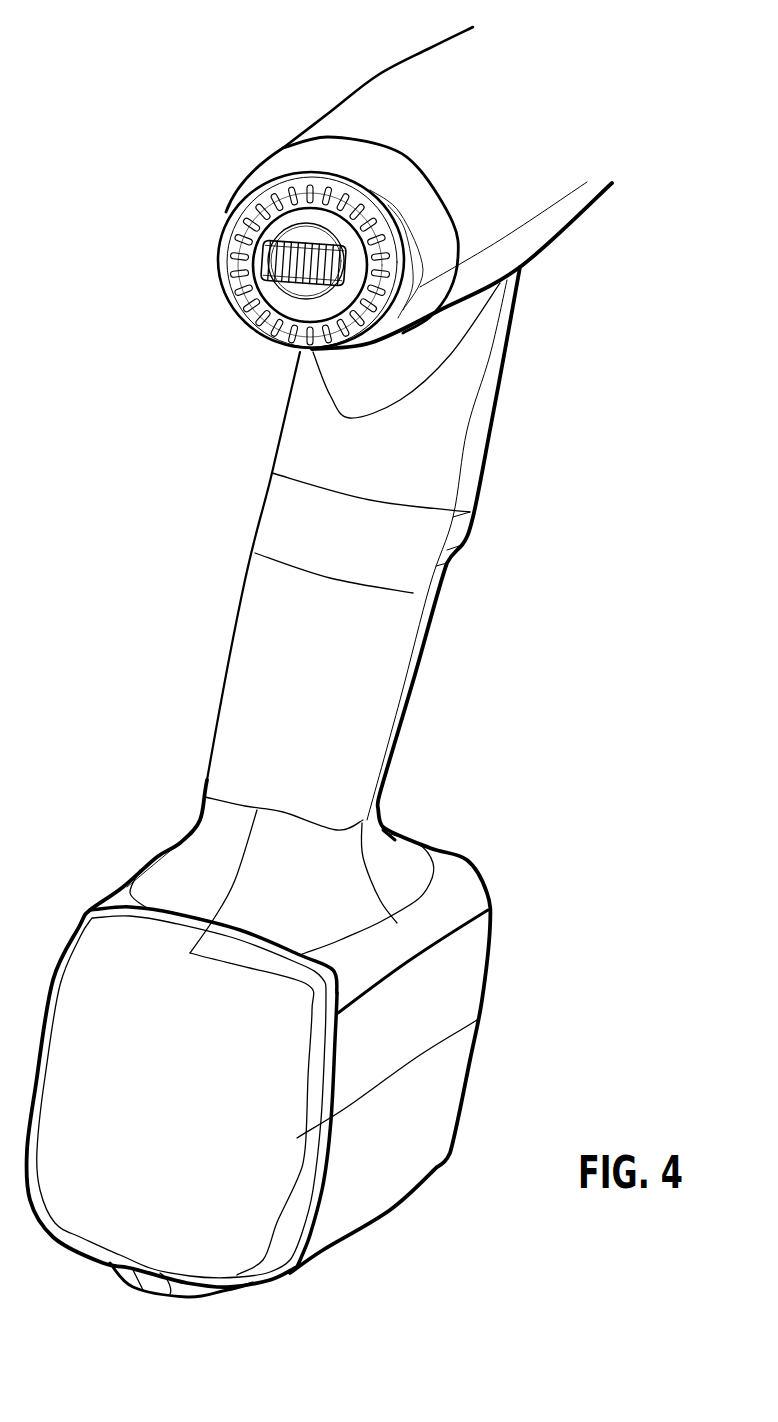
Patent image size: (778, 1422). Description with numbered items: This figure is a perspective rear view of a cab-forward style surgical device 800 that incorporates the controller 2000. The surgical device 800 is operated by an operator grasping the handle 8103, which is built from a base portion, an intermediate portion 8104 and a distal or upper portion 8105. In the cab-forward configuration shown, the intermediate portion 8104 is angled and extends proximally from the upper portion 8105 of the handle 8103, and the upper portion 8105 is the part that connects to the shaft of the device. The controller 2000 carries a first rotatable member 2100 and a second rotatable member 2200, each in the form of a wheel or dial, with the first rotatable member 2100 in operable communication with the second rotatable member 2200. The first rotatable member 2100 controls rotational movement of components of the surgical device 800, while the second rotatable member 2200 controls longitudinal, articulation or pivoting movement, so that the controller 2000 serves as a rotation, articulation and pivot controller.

The surgical device 800 is at (337, 57).
The controller 2000 is at (225, 133).
The first rotatable member 2100 is at (248, 225).
The second rotatable member 2200 is at (263, 255).
The handle 8103 is at (593, 207).
The intermediate portion 8104 is at (502, 373).
The upper portion 8105 is at (378, 73).